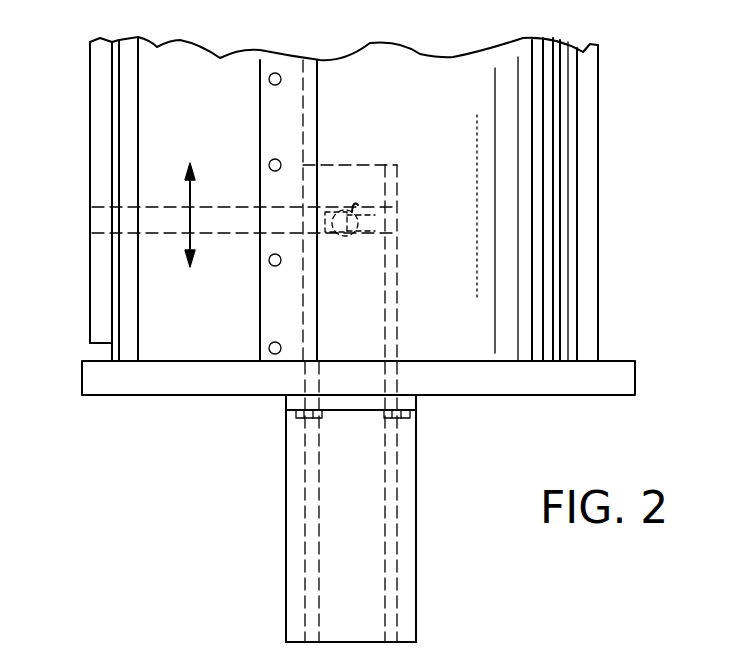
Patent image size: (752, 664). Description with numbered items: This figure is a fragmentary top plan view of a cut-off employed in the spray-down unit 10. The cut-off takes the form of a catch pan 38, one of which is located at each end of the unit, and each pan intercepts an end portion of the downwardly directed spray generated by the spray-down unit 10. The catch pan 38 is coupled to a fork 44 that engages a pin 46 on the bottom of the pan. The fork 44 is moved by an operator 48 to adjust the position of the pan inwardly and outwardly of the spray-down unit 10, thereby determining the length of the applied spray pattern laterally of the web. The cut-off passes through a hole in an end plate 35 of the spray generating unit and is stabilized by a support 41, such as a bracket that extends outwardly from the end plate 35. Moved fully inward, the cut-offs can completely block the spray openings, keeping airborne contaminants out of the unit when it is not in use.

The spray-down unit 10 is at (416, 44).
The end plate 35 is at (113, 392).
The catch pan 38 is at (302, 500).
The support 41 is at (286, 568).
The fork 44 is at (215, 210).
The pin 46 is at (348, 200).
The operator 48 is at (100, 136).